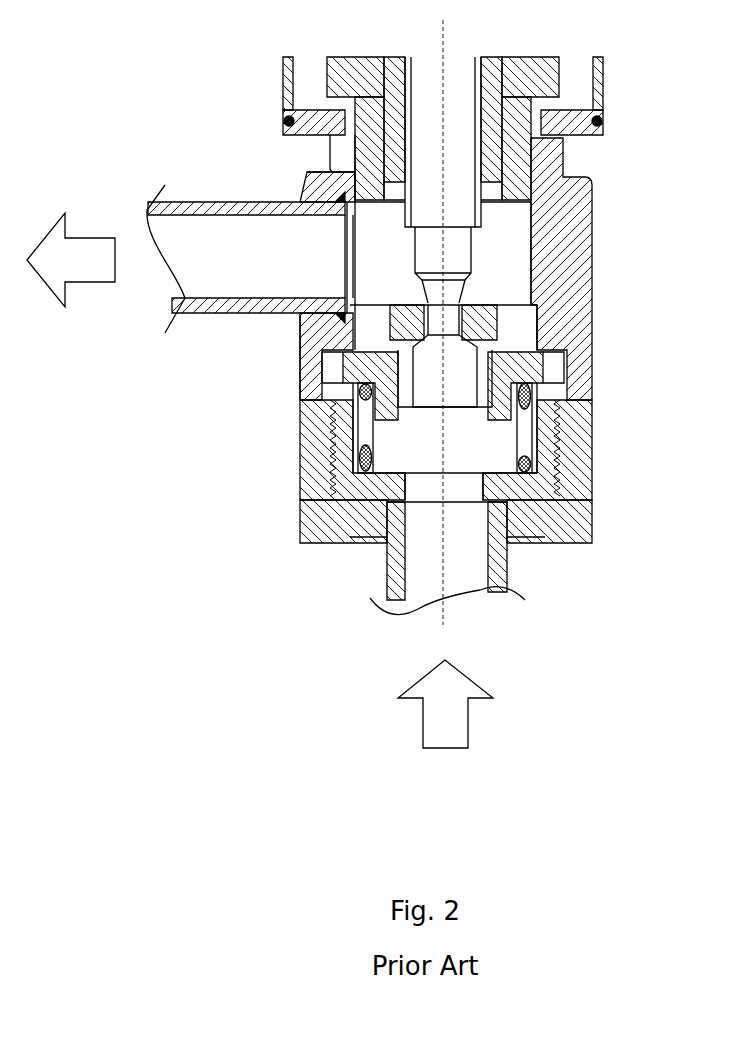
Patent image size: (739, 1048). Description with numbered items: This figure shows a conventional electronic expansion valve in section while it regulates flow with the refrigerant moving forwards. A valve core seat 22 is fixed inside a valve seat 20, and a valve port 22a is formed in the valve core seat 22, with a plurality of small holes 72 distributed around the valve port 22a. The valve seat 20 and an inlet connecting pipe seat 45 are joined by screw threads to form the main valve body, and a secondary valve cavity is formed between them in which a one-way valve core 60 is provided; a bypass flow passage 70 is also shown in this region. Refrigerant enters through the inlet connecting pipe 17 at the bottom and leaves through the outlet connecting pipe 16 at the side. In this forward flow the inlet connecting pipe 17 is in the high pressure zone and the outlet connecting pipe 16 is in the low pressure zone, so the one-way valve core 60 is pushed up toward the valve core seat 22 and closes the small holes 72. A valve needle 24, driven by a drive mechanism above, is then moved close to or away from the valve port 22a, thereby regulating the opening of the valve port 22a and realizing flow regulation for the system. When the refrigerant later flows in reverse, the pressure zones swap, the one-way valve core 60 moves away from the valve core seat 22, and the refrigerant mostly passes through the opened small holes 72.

The outlet connecting pipe 16 is at (246, 275).
The inlet connecting pipe 17 is at (388, 592).
The valve seat 20 is at (575, 443).
The valve core seat 22 is at (545, 292).
The valve port 22a is at (302, 366).
The valve needle 24 is at (420, 279).
The inlet connecting pipe seat 45 is at (337, 527).
The one-way valve core 60 is at (583, 403).
The bypass flow passage 70 is at (556, 369).
The small hole 72 is at (515, 322).